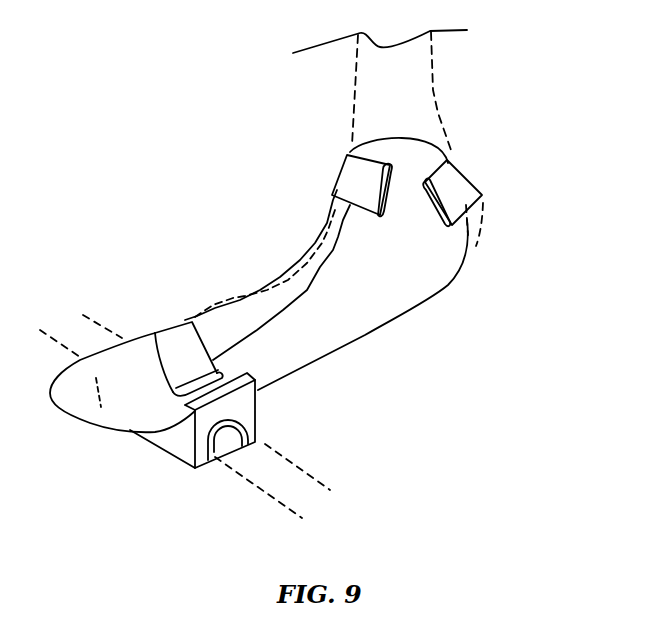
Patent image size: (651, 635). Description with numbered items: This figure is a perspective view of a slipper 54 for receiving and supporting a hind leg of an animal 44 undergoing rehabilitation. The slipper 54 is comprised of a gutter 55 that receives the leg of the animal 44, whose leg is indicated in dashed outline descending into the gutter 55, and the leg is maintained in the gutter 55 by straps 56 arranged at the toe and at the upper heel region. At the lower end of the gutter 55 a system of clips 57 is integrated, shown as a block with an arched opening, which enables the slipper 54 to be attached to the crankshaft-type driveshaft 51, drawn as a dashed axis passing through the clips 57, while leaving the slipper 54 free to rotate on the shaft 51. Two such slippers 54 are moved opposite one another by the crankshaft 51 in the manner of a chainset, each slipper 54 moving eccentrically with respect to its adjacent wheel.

The animal 44 is at (433, 83).
The crankshaft-type driveshaft 51 is at (257, 482).
The slipper 54 is at (332, 353).
The gutter 55 is at (357, 295).
The straps 56 is at (170, 330).
The system of clips 57 is at (243, 405).